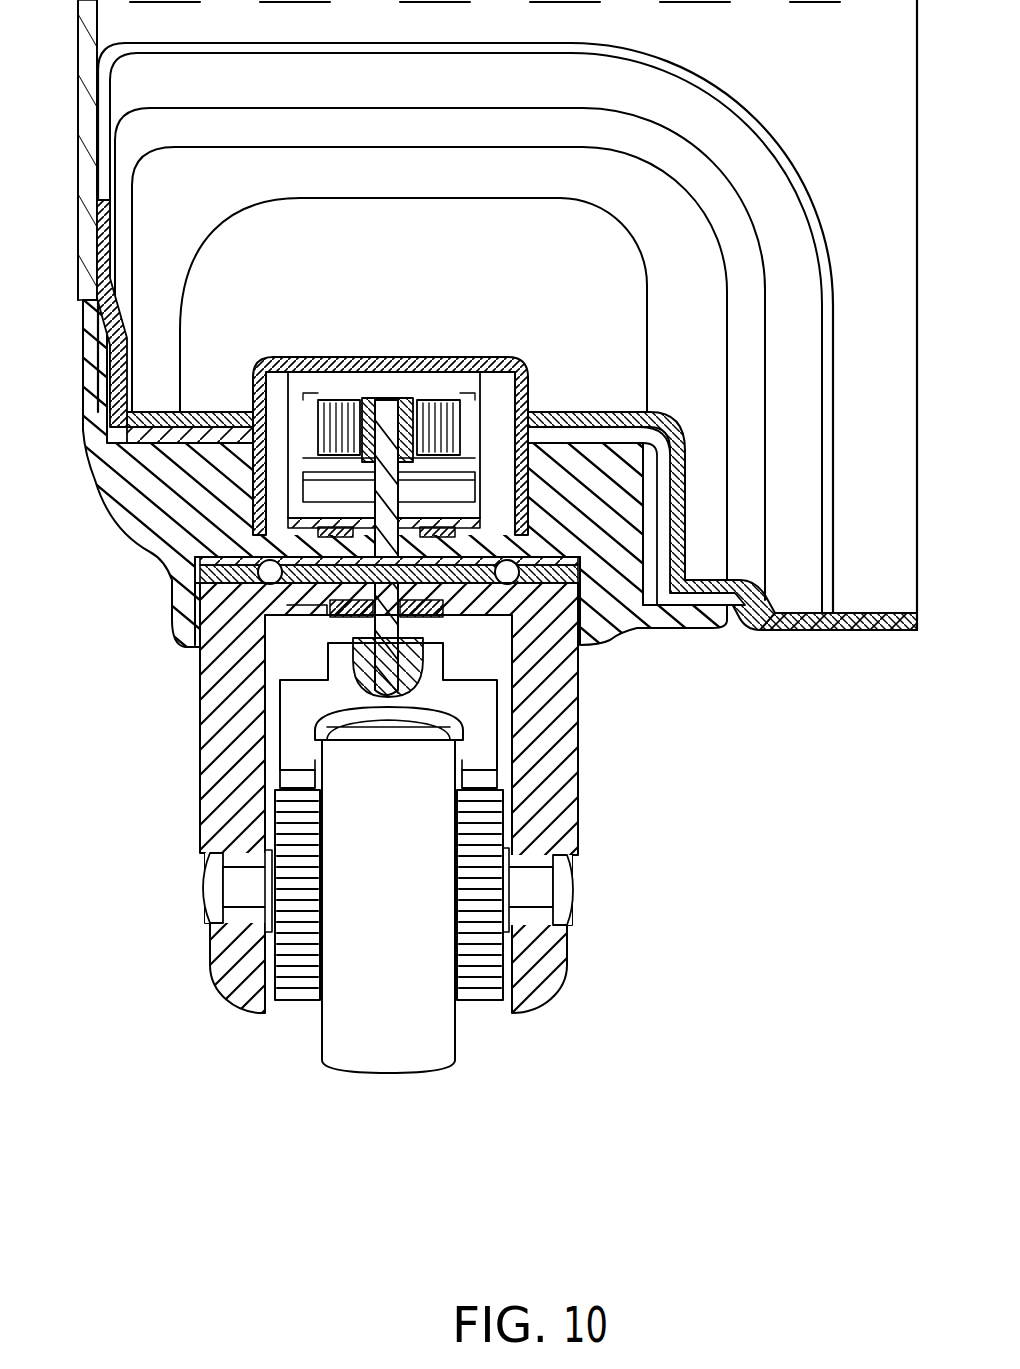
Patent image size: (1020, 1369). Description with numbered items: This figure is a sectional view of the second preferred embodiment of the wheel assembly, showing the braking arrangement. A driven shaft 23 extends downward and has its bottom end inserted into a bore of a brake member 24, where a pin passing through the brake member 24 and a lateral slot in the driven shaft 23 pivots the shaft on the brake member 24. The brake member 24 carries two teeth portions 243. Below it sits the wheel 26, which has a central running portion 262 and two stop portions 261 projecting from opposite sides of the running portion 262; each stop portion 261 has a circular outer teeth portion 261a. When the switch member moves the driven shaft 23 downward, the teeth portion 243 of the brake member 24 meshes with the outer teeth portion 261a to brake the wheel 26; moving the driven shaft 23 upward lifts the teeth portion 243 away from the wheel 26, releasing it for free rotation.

The driven shaft 23 is at (380, 486).
The brake member 24 is at (472, 725).
The teeth portion 243 is at (483, 780).
The wheel 26 is at (394, 974).
The stop portion 261 is at (300, 983).
The running portion 262 is at (375, 1060).
The outer teeth portion 261a is at (479, 977).